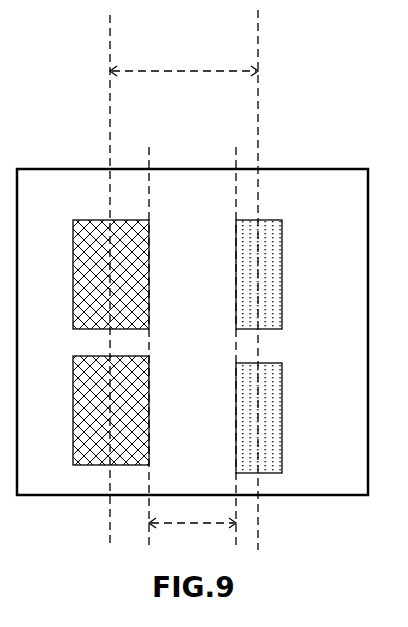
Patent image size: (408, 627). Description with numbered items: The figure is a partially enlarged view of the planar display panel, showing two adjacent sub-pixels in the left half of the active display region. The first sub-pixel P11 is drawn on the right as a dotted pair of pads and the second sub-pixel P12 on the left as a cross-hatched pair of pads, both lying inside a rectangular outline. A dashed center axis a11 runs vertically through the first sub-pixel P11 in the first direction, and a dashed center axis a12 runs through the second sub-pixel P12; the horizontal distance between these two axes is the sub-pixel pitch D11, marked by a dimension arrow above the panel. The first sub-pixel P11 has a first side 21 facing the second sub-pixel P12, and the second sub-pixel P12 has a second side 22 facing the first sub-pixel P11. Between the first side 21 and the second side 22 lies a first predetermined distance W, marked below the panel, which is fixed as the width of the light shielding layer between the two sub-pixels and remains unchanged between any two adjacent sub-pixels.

The center axis of the second sub-pixel a12 is at (90, 280).
The center axis of the first sub-pixel a11 is at (281, 280).
The sub-pixel pitch D11 is at (184, 59).
The first predetermined distance W is at (192, 514).
The second side 22 is at (149, 238).
The first side 21 is at (236, 250).
The second sub-pixel P12 is at (107, 220).
The first sub-pixel P11 is at (282, 220).